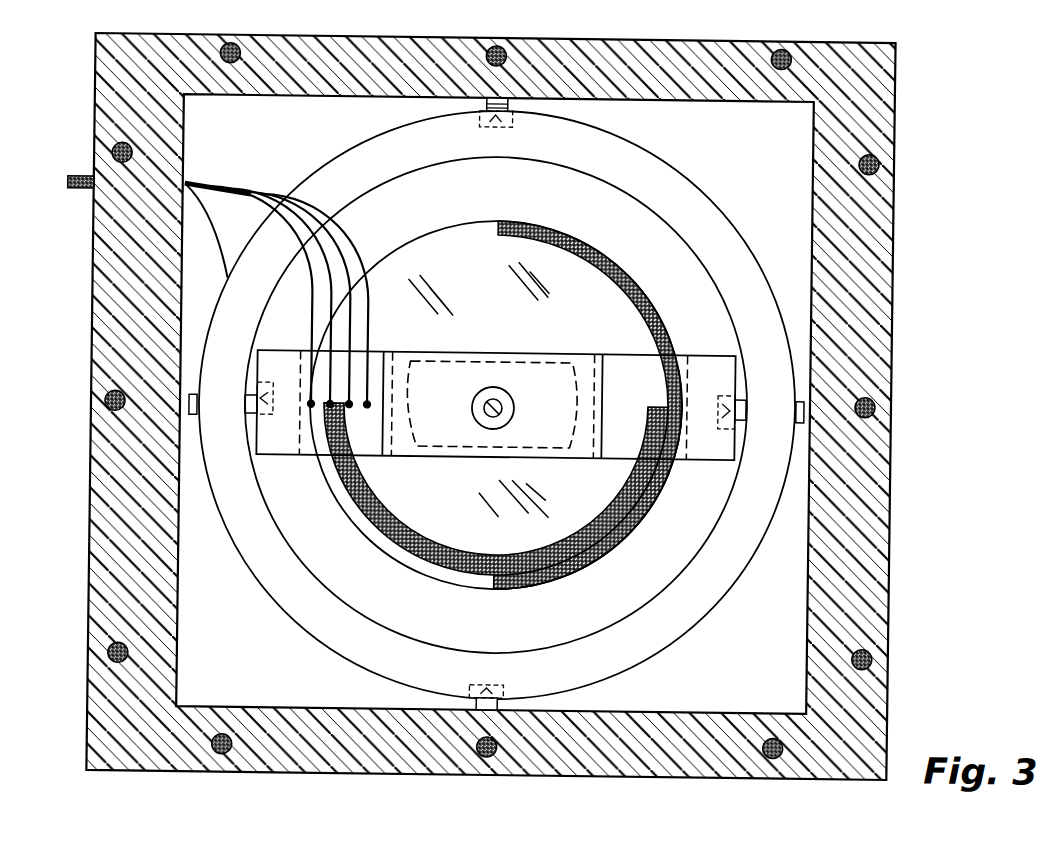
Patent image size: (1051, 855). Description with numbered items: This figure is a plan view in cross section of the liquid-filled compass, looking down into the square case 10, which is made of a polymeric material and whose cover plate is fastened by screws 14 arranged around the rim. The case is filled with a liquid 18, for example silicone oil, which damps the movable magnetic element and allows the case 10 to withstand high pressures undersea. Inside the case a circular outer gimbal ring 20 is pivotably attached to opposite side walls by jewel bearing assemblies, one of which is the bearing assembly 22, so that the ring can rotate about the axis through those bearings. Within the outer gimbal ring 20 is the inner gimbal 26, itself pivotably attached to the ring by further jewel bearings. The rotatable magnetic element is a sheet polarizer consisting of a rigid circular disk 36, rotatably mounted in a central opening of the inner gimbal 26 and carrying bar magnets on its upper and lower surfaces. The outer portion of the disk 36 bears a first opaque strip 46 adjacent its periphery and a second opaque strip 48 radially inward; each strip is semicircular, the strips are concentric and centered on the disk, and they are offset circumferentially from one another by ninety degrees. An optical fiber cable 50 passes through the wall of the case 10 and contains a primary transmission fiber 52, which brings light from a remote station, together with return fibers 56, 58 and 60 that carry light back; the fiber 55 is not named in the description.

The case 10 is at (891, 597).
The screws 14 is at (486, 52).
The liquid 18 is at (745, 683).
The outer gimbal ring 20 is at (700, 211).
The jewel bearing assembly 22 is at (484, 101).
The inner gimbal 26 is at (701, 460).
The disk 36 is at (496, 226).
The first opaque strip 46 is at (604, 546).
The second opaque strip 48 is at (455, 565).
The optical fiber cable 50 is at (72, 181).
The primary transmission fiber 52 is at (219, 232).
The lead wire 55 is at (280, 231).
The return fiber 56 is at (326, 303).
The return fiber 58 is at (240, 183).
The return fiber 60 is at (277, 198).